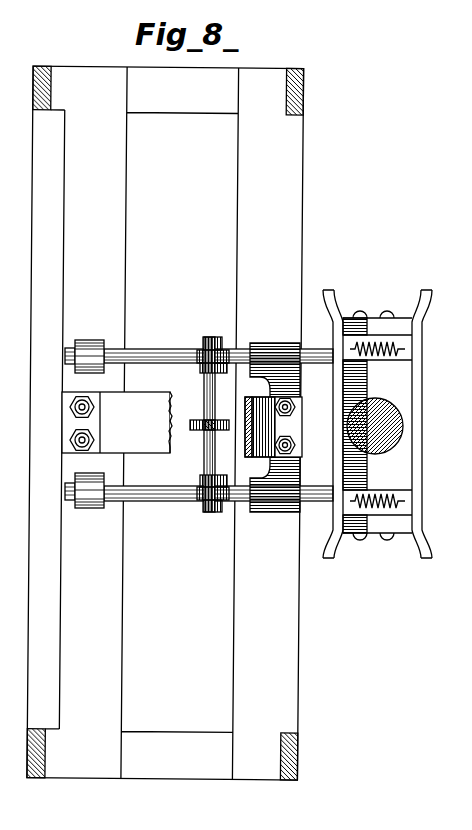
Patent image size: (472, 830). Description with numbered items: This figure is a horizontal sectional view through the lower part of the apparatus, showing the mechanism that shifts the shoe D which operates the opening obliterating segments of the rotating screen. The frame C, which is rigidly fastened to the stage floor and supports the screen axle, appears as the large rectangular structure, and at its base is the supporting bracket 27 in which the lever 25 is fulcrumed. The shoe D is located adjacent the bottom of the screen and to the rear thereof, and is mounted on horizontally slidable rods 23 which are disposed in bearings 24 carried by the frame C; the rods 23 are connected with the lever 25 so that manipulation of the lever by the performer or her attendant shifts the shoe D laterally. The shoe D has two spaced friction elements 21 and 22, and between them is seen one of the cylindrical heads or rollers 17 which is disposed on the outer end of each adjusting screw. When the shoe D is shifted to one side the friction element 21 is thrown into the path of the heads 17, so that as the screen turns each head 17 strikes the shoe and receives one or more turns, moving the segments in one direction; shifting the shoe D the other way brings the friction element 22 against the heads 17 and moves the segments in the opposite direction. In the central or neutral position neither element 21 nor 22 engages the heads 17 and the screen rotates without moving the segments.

The frame C is at (165, 423).
The shoe D is at (421, 386).
The cylindrical head 17 is at (394, 437).
The friction element 21 is at (419, 426).
The friction element 22 is at (333, 450).
The horizontally slidable rod 23 is at (158, 350).
The bearing 24 is at (259, 355).
The lever 25 is at (205, 420).
The supporting bracket 27 is at (147, 447).